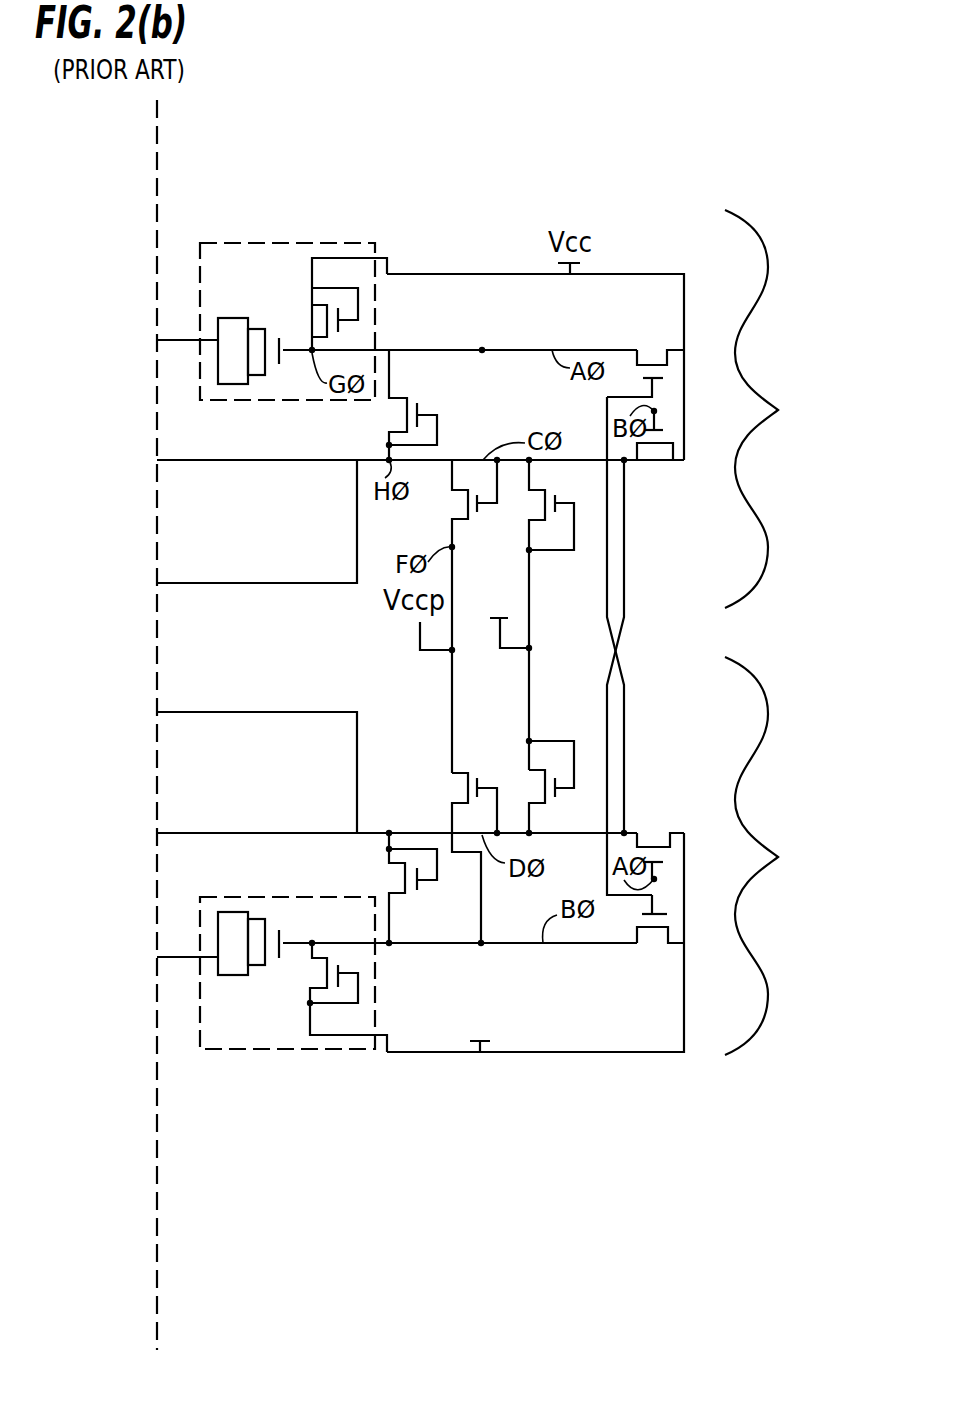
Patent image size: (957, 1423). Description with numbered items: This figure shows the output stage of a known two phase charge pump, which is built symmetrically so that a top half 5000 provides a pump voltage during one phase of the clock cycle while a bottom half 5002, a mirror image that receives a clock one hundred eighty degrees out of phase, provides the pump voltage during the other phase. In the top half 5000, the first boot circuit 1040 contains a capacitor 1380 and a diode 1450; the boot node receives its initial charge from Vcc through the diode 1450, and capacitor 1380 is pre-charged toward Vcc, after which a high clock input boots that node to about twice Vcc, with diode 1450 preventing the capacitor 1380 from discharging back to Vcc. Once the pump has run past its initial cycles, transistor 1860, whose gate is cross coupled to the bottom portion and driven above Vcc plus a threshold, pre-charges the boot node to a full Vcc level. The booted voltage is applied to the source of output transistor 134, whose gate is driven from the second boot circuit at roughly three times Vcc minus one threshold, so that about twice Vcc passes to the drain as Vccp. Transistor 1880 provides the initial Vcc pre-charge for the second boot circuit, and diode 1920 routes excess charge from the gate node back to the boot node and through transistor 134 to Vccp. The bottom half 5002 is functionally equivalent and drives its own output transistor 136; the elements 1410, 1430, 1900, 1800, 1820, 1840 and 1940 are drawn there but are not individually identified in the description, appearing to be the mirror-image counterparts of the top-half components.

The output transistor 134 is at (473, 498).
The output transistor 136 is at (450, 817).
The first boot circuit 1040 is at (375, 307).
The capacitor 1380 is at (268, 326).
The storage capacitor 1410 is at (267, 992).
The access transistor 1430 is at (325, 967).
The diode 1450 is at (325, 320).
The transistor 1800 is at (540, 788).
The transistor 1820 is at (652, 928).
The transistor 1840 is at (647, 845).
The transistor 1860 is at (653, 350).
The transistor 1880 is at (653, 460).
The transistor 1900 is at (540, 505).
The diode 1920 is at (388, 416).
The transistor 1940 is at (383, 882).
The top half of the pump circuit 5000 is at (781, 409).
The bottom half of the pump circuit 5002 is at (781, 856).